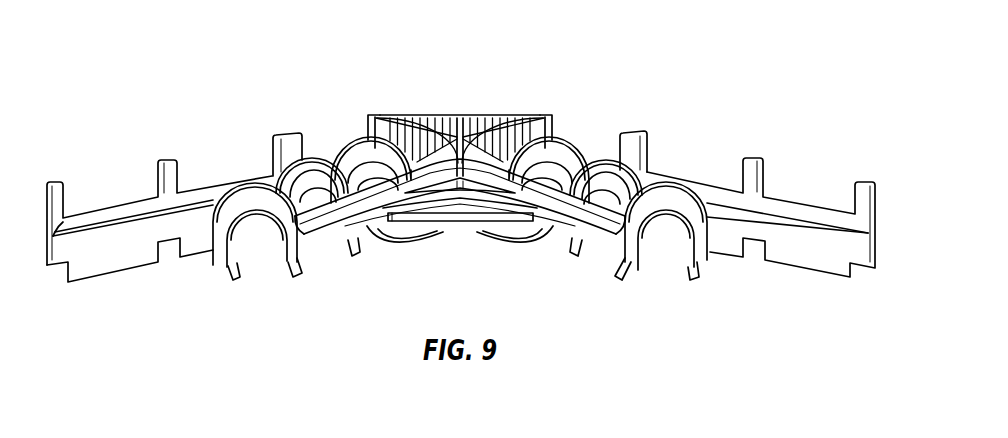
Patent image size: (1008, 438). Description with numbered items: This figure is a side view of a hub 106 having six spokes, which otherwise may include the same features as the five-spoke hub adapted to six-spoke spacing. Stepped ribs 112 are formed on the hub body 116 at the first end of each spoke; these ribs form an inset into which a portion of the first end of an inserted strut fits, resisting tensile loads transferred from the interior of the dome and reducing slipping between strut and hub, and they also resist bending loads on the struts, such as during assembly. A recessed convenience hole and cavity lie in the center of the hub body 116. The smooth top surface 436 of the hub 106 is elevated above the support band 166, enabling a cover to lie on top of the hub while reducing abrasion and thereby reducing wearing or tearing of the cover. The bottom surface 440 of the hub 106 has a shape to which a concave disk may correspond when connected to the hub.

The hub 106 is at (528, 63).
The stepped ribs 112 is at (382, 120).
The hub body 116 is at (550, 123).
The support band 166 is at (637, 133).
The top surface 436 is at (442, 120).
The bottom surface 440 is at (458, 235).